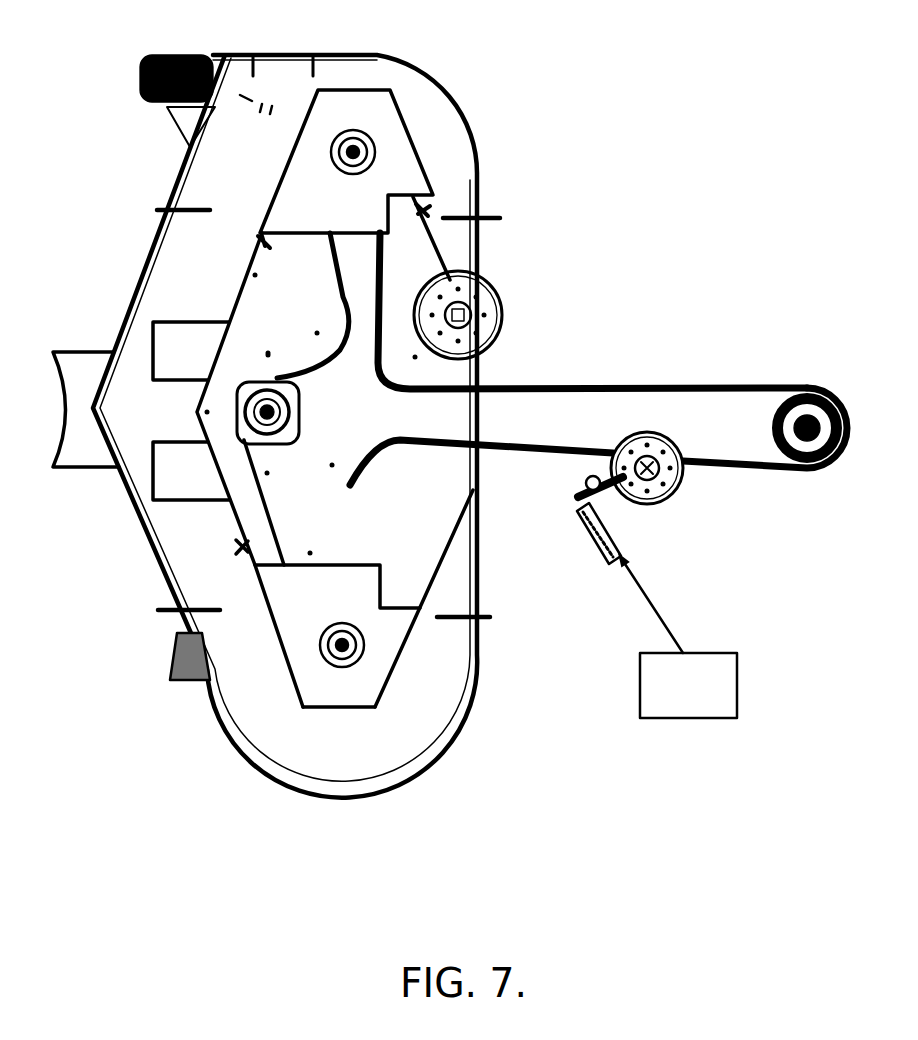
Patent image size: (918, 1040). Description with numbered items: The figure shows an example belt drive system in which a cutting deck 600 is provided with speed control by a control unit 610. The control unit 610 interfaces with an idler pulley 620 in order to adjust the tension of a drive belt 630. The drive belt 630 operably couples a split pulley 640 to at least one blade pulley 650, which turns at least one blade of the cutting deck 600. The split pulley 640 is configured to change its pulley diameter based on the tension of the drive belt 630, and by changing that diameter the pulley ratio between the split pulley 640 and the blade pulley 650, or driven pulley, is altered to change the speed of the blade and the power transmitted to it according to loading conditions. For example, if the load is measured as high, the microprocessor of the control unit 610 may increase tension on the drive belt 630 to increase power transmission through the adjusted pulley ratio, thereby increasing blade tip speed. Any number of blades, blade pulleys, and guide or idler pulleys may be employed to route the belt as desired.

The cutting deck 600 is at (130, 185).
The control unit 610 is at (640, 687).
The idler pulley 620 is at (667, 488).
The drive belt 630 is at (640, 392).
The split pulley 640 is at (797, 408).
The blade pulley 650 is at (287, 428).